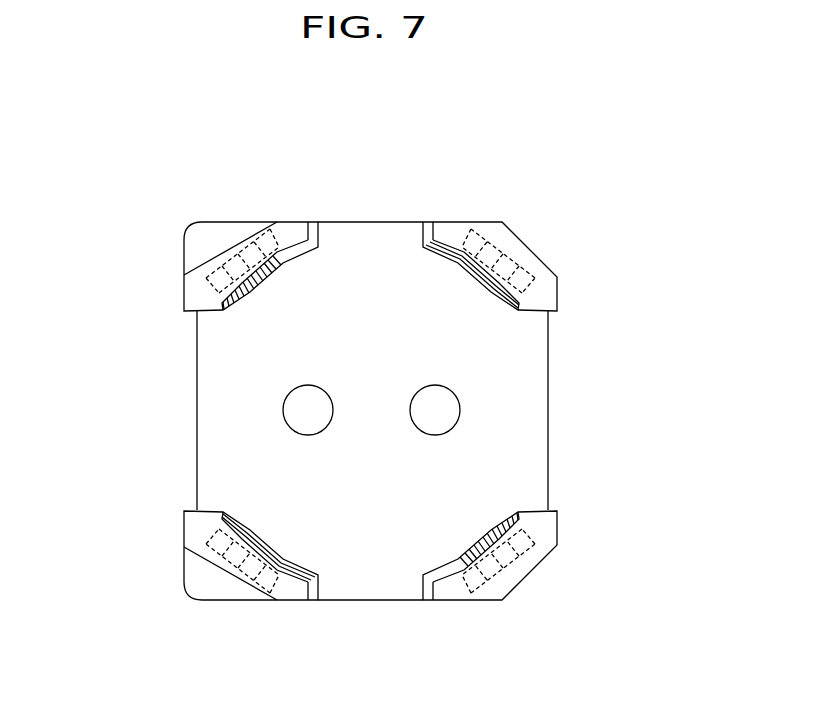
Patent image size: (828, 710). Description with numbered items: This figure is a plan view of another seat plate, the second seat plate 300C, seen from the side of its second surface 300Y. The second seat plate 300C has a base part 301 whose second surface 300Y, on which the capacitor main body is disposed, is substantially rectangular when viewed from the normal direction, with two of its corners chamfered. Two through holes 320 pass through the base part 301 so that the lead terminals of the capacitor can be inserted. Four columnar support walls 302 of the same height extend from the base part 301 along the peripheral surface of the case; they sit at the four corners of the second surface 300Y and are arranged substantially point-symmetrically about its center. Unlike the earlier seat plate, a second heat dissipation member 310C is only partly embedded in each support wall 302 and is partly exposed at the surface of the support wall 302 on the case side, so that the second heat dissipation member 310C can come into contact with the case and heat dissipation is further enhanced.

The second seat plate 300C is at (405, 93).
The base part 301 is at (510, 458).
The columnar support wall 302 is at (445, 232).
The second heat dissipation member 310C is at (183, 266).
The through hole 320 is at (438, 412).
The second surface 300Y is at (493, 353).